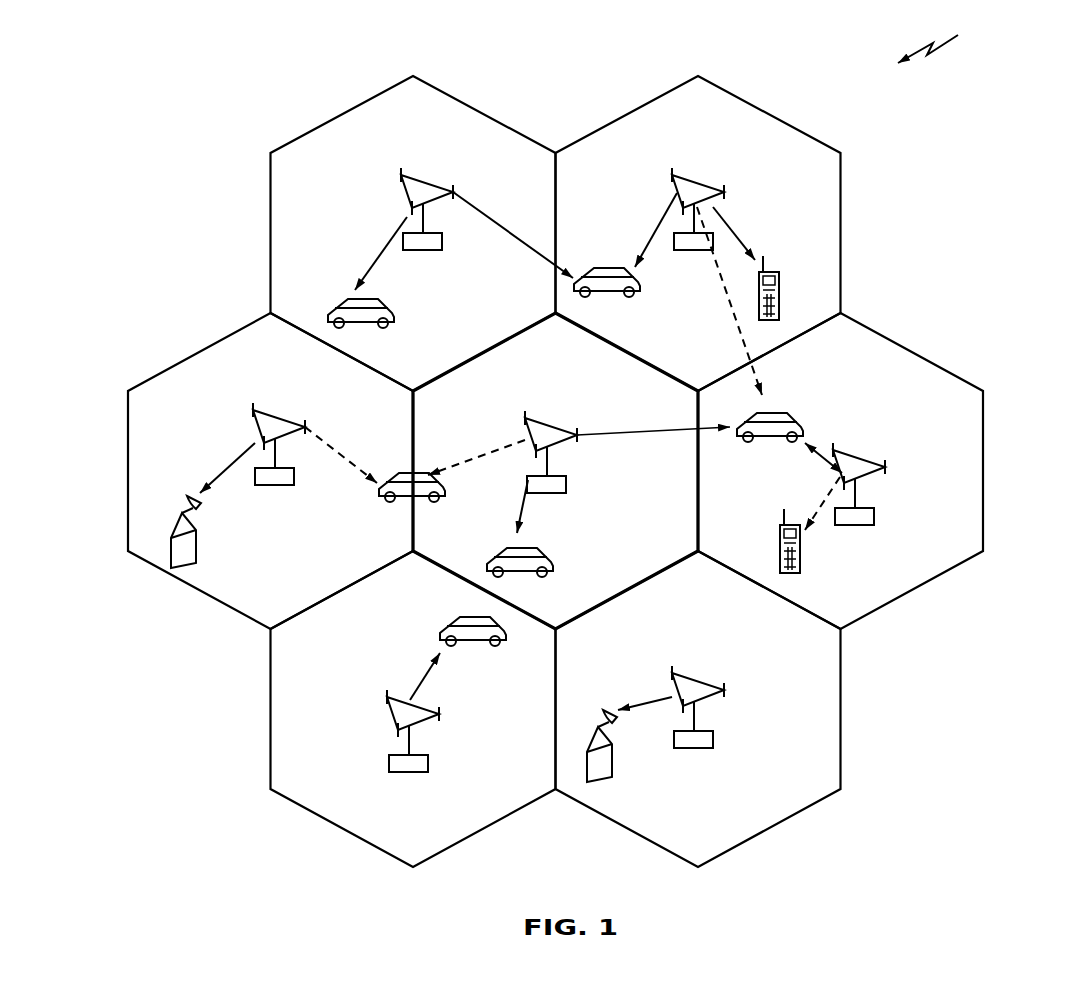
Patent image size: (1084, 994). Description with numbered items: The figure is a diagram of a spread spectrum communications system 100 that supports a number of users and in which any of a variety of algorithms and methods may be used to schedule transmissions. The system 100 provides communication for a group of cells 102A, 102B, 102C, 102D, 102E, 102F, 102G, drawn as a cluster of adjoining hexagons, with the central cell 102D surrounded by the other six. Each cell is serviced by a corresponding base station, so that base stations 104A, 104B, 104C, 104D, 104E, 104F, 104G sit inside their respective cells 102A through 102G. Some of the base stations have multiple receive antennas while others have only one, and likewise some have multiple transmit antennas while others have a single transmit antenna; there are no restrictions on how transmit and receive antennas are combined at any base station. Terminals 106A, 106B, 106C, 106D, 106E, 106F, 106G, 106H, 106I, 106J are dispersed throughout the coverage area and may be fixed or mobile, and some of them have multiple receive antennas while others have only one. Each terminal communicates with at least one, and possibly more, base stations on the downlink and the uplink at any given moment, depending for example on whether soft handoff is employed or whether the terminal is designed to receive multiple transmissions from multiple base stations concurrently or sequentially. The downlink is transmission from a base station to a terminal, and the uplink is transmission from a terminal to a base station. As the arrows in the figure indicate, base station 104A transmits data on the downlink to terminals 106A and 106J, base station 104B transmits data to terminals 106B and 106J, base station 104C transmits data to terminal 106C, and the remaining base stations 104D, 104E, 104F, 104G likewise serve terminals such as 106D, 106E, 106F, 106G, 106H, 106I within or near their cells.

The communications system 100 is at (957, 38).
The cell 102A is at (352, 108).
The cell 102B is at (758, 108).
The cell 102C is at (192, 356).
The cell 102D is at (592, 358).
The cell 102E is at (984, 470).
The cell 102F is at (271, 718).
The cell 102G is at (841, 690).
The base station 104A is at (411, 182).
The base station 104B is at (680, 182).
The base station 104C is at (260, 417).
The base station 104D is at (533, 427).
The base station 104E is at (842, 457).
The base station 104F is at (390, 703).
The base station 104G is at (680, 680).
The terminal 106A is at (355, 300).
The terminal 106B is at (768, 272).
The terminal 106C is at (188, 503).
The terminal 106D is at (520, 548).
The terminal 106E is at (770, 413).
The terminal 106F is at (470, 620).
The terminal 106G is at (603, 712).
The terminal 106H is at (402, 476).
The terminal 106I is at (783, 525).
The terminal 106J is at (615, 268).